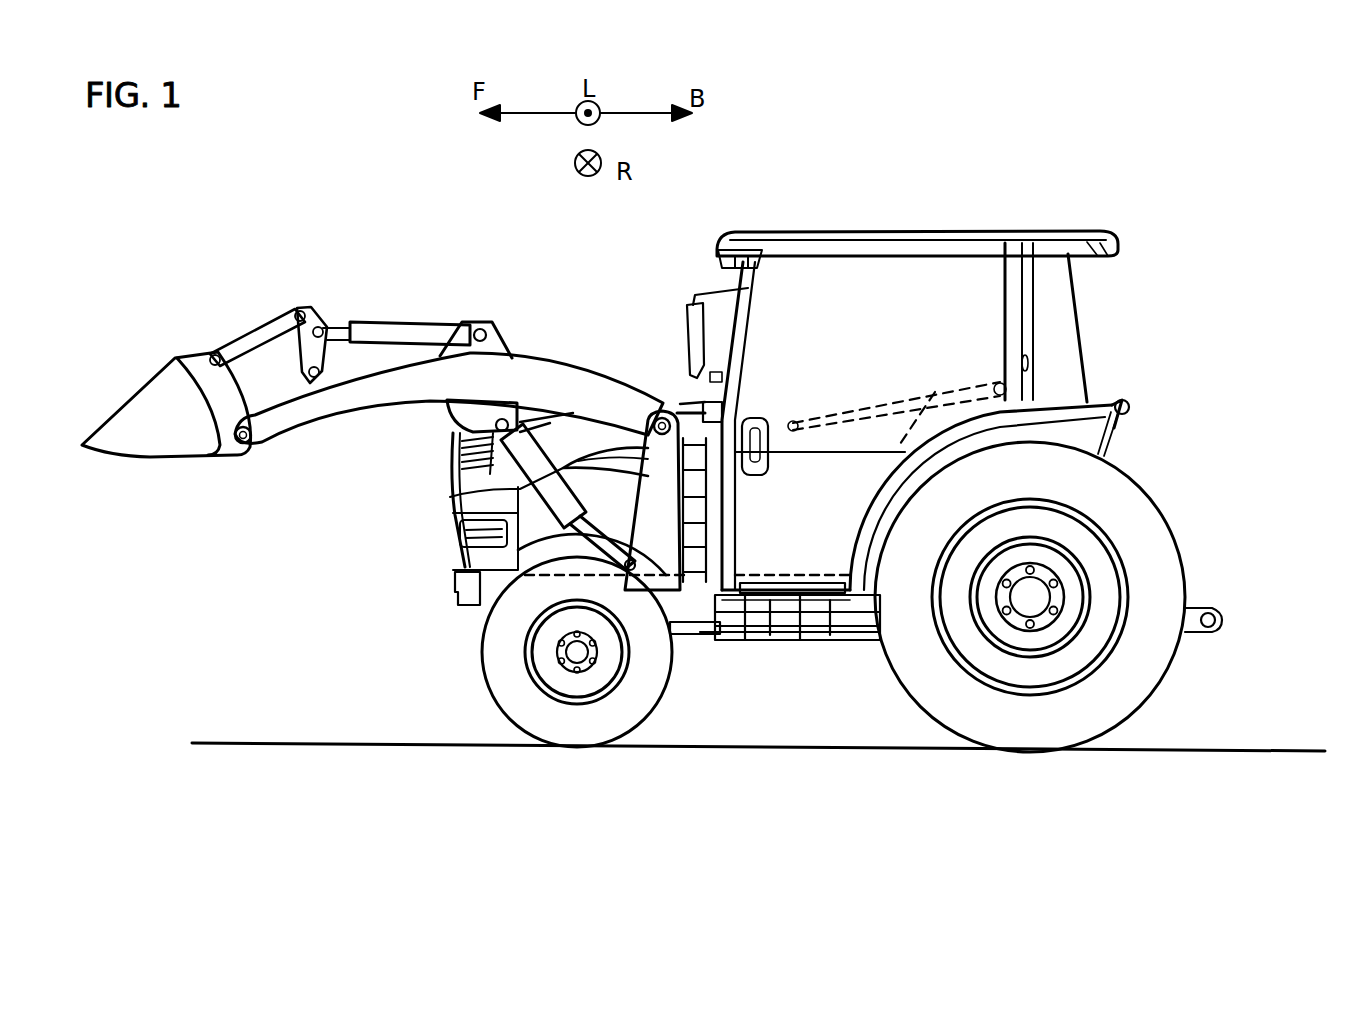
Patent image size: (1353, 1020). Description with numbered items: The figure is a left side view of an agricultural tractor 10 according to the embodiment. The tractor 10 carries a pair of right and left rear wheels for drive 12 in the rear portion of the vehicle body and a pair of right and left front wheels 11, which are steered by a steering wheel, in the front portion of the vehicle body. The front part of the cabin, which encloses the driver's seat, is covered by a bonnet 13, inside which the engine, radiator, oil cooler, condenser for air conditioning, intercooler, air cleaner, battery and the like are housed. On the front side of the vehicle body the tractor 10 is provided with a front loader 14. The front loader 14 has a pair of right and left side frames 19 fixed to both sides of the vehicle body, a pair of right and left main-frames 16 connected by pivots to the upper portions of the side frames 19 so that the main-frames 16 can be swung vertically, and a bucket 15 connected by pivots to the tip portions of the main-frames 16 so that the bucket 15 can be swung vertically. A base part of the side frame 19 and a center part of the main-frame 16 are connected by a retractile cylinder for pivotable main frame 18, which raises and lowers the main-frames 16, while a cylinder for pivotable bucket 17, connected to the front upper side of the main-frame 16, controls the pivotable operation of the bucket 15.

The tractor 10 is at (326, 172).
The front wheel 11 is at (497, 680).
The rear wheel 12 is at (1180, 571).
The bonnet 13 is at (675, 400).
The front loader 14 is at (478, 291).
The bucket 15 is at (157, 387).
The main frame 16 is at (393, 398).
The cylinder for pivotable bucket 17 is at (393, 322).
The cylinder for pivotable main frame 18 is at (517, 467).
The side frame 19 is at (668, 562).